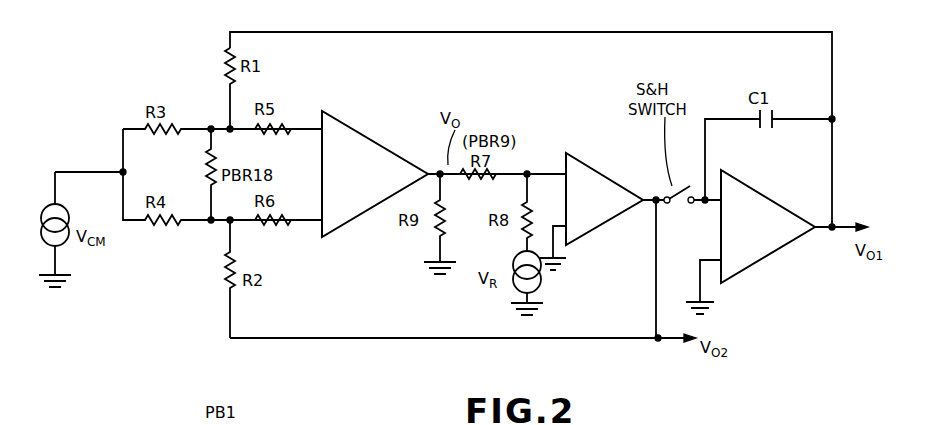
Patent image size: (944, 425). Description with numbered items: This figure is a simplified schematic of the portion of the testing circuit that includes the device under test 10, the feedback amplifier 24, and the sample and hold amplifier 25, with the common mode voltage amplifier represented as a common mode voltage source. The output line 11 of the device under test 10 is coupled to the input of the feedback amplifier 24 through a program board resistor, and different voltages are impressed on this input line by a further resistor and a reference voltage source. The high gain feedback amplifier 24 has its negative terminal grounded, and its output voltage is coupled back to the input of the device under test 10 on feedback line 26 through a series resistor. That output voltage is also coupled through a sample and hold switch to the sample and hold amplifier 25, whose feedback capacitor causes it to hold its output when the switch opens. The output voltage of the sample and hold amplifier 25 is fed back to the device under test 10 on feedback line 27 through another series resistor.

The device under test 10 is at (368, 134).
The output line 11 is at (440, 174).
The feedback amplifier 24 is at (608, 178).
The sample and hold amplifier 25 is at (768, 256).
The feedback line 26 is at (432, 338).
The feedback line 27 is at (372, 32).